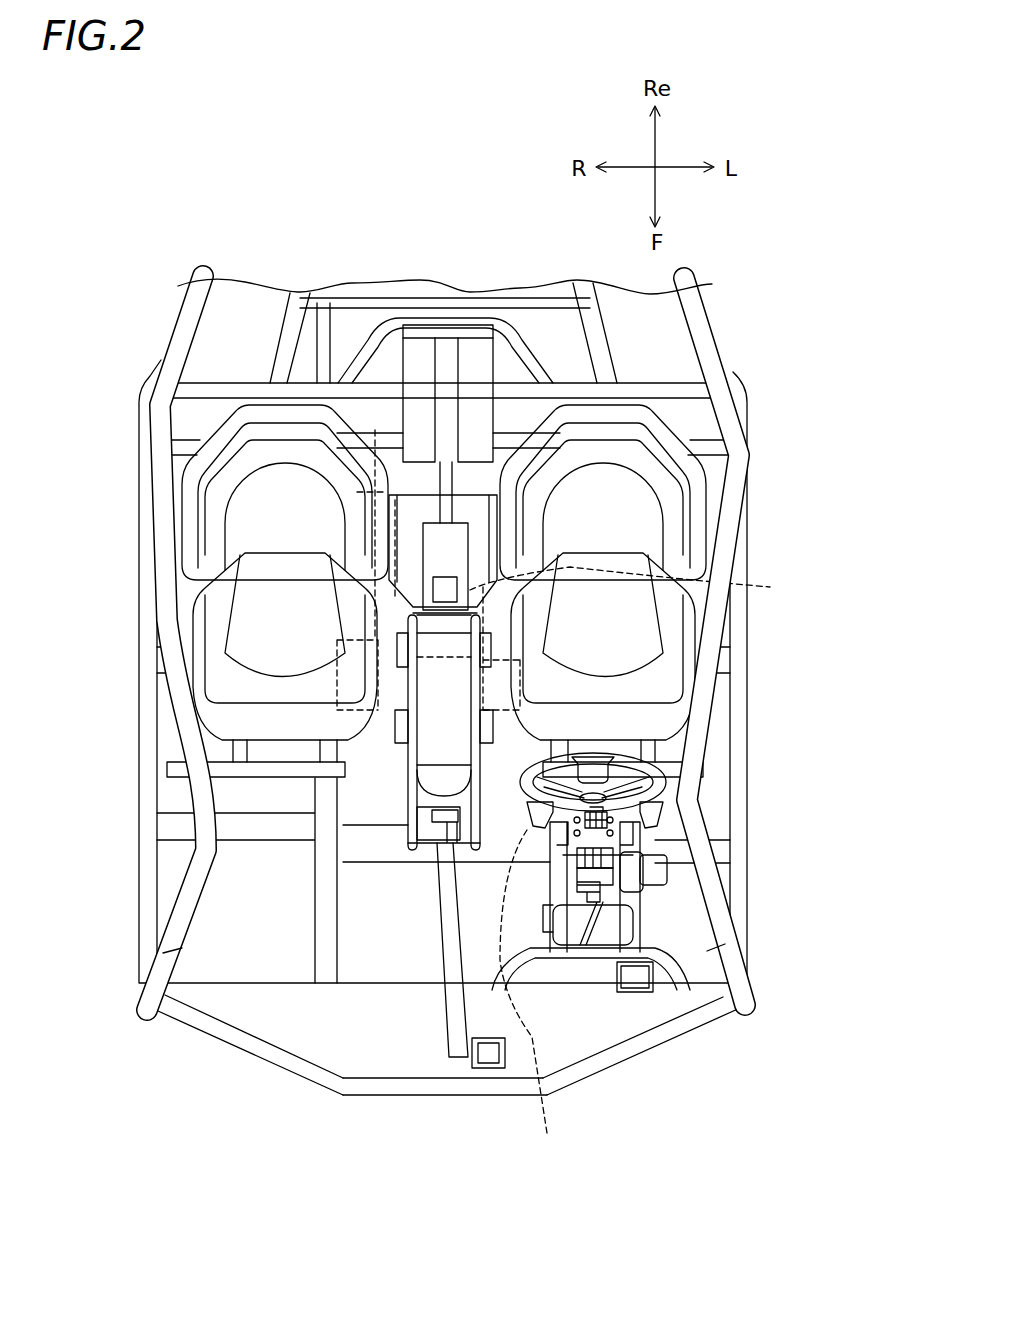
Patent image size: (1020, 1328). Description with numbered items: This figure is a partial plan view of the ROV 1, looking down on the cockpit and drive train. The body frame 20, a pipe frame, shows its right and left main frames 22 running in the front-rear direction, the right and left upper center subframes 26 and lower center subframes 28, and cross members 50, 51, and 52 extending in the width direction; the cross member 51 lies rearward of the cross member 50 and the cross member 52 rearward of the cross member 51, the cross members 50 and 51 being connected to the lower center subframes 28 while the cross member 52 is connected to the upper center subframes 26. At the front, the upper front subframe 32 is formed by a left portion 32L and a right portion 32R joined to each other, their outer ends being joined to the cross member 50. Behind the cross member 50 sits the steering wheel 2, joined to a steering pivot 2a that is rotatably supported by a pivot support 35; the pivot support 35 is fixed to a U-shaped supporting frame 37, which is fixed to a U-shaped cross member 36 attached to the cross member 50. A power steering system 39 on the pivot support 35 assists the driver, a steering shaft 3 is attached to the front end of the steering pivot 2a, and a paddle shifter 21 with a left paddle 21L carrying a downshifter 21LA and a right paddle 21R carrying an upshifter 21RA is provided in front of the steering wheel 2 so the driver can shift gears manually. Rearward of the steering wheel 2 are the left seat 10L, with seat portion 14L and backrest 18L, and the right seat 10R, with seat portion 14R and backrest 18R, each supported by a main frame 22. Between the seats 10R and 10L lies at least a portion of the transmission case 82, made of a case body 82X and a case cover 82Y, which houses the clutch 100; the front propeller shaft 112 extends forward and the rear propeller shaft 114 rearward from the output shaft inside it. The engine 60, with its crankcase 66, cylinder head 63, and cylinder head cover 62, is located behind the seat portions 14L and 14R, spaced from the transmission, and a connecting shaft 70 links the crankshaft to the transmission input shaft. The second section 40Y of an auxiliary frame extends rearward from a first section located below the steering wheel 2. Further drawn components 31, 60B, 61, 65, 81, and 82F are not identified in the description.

The ROV 1 is at (722, 290).
The steering wheel 2 is at (658, 767).
The steering pivot 2a is at (625, 792).
The steering shaft 3 is at (690, 955).
The right seat 10R is at (218, 582).
The left seat 10L is at (639, 582).
The seat portion 14R is at (263, 643).
The seat portion 14L is at (650, 640).
The backrest 18R is at (285, 492).
The backrest 18L is at (603, 492).
The body frame 20 is at (451, 616).
The paddle shifter 21 is at (664, 972).
The left paddle 21L is at (645, 835).
The right paddle 21R is at (553, 952).
The downshifter 21LA is at (655, 803).
The upshifter 21RA is at (539, 982).
The main frames 22 is at (330, 980).
The upper center subframes 26 is at (197, 868).
The lower center subframes 28 is at (150, 907).
The bracket 31 is at (487, 1062).
The upper front subframe 32 is at (457, 1100).
The right portion 32R is at (307, 1075).
The left portion 32L is at (693, 1018).
The pivot support 35 is at (668, 868).
The cross member 36 is at (603, 952).
The supporting frame 37 is at (535, 828).
The power steering system 39 is at (636, 910).
The second section 40Y is at (291, 979).
The cross member 50 is at (407, 987).
The cross member 51 is at (483, 353).
The cross member 52 is at (245, 390).
The engine 60 is at (429, 351).
The hoop bracket 60B is at (420, 350).
The control unit 61 is at (428, 535).
The cylinder head cover 62 is at (460, 440).
The cylinder head 63 is at (420, 345).
The housing 65 is at (280, 535).
The crankcase 66 is at (370, 325).
The connecting shaft 70 is at (443, 587).
The pedal unit 81 is at (650, 990).
The transmission case 82 is at (431, 860).
The case body 82X is at (495, 750).
The case cover 82Y is at (415, 622).
The front engine mount 82F is at (433, 822).
The clutch 100 is at (639, 582).
The front propeller shaft 112 is at (463, 1068).
The rear propeller shaft 114 is at (590, 515).